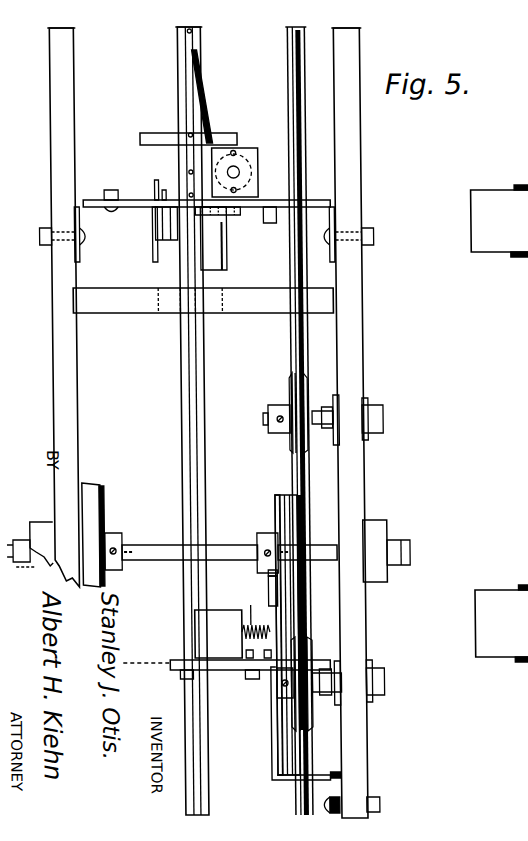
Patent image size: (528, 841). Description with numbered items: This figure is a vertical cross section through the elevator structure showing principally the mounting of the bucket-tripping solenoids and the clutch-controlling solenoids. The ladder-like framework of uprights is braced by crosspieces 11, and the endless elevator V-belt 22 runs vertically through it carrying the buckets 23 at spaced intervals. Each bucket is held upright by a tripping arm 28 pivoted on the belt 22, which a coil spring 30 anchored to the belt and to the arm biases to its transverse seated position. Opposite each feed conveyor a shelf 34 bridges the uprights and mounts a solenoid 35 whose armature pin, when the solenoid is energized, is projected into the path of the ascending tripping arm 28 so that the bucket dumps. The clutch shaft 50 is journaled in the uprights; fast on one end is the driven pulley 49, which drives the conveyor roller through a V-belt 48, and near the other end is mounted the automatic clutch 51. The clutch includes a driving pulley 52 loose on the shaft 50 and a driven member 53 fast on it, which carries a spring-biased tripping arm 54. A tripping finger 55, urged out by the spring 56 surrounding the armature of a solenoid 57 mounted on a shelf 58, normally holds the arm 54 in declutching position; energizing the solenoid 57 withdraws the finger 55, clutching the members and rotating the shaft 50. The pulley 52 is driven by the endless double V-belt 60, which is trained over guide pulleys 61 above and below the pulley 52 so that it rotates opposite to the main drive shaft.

The crosspiece 11 is at (126, 304).
The endless elevator V-belt 22 is at (188, 386).
The bucket 23 is at (166, 266).
The tripping arm 28 is at (229, 134).
The coil spring 30 is at (211, 125).
The shelf 34 is at (128, 200).
The solenoid 35 is at (248, 150).
The V-belt 48 is at (86, 485).
The driven pulley 49 is at (100, 508).
The clutch shaft 50 is at (145, 556).
The automatic clutch 51 is at (264, 514).
The pulley 52 is at (305, 522).
The driven member 53 is at (276, 497).
The tripping arm 54 is at (260, 573).
The tripping finger 55 is at (262, 590).
The spring 56 is at (264, 622).
The solenoid 57 is at (213, 650).
The shelf 58 is at (264, 734).
The endless double V-belt 60 is at (296, 336).
The guide pulley 61 is at (286, 392).